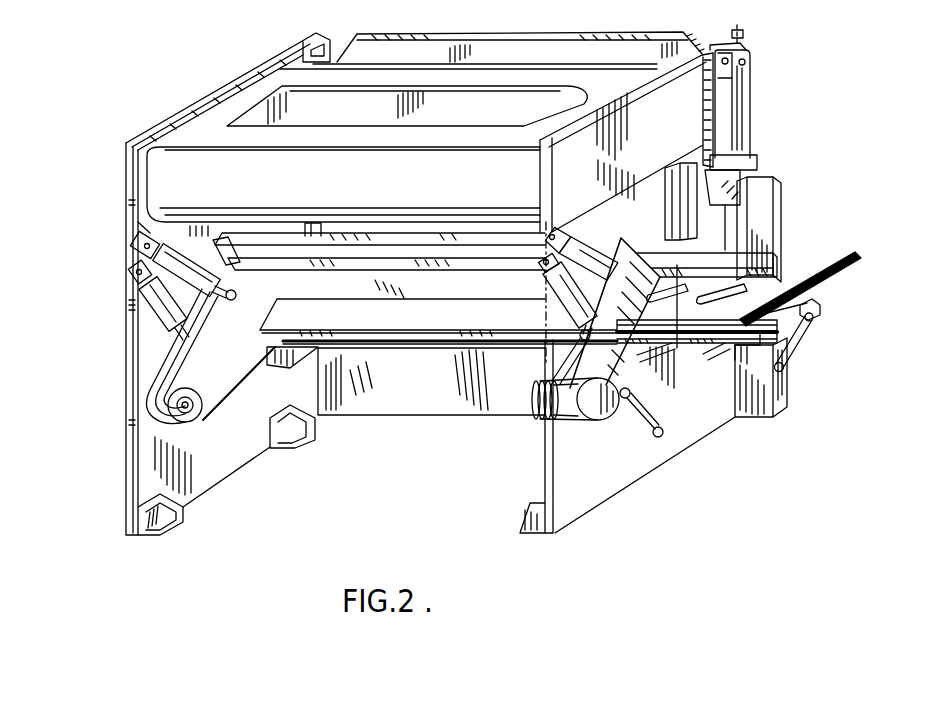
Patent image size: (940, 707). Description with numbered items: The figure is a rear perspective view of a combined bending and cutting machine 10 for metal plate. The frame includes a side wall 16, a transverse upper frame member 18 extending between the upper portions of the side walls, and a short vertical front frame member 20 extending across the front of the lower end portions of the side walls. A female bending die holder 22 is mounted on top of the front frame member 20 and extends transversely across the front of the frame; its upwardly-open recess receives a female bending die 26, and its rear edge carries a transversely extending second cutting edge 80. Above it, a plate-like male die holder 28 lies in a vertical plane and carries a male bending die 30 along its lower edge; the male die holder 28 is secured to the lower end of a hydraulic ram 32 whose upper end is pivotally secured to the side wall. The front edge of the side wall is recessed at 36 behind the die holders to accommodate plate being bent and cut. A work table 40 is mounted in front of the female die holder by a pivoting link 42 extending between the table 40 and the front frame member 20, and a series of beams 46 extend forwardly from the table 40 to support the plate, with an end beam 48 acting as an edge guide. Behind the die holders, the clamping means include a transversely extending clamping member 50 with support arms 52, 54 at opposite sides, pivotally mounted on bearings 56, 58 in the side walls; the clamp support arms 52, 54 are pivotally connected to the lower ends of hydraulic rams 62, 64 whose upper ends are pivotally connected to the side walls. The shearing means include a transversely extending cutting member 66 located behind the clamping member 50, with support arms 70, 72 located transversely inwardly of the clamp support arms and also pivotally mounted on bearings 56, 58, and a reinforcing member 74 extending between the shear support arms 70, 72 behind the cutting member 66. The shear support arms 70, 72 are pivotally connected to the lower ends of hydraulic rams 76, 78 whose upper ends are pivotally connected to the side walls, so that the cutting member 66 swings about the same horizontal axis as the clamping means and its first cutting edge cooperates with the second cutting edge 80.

The apparatus 10 is at (190, 96).
The side wall 16 is at (146, 338).
The transverse upper frame member 18 is at (172, 192).
The front frame member 20 is at (380, 405).
The female bending die holder 22 is at (797, 366).
The female bending die 26 is at (795, 336).
The male die holder 28 is at (780, 215).
The male bending die 30 is at (777, 231).
The hydraulic ram 32 is at (750, 110).
The recess 36 is at (708, 406).
The work table 40 is at (795, 318).
The pivoting link 42 is at (806, 352).
The beams 46 is at (768, 285).
The end beam 48 is at (862, 265).
The clamping member 50 is at (443, 243).
The clamp support arm 52 is at (636, 252).
The clamp support arm 54 is at (162, 355).
The bearing 56 is at (608, 414).
The bearing 58 is at (205, 420).
The hydraulic ram 62 is at (565, 316).
The hydraulic ram 64 is at (152, 298).
The cutting member 66 is at (376, 277).
The shear support arm 70 is at (549, 352).
The shear support arm 72 is at (228, 372).
The reinforcing member 74 is at (400, 325).
The hydraulic ram 76 is at (576, 248).
The hydraulic ram 78 is at (133, 252).
The second cutting edge 80 is at (747, 337).